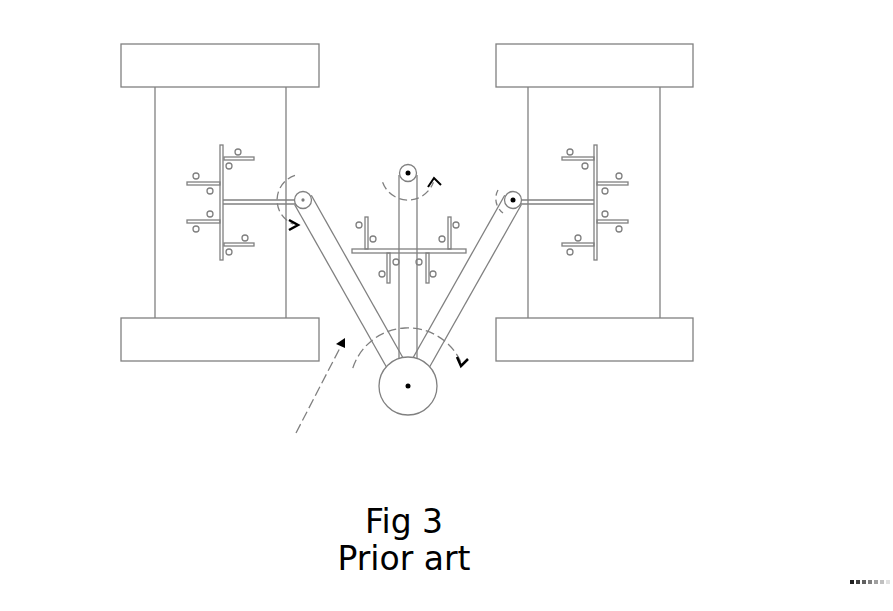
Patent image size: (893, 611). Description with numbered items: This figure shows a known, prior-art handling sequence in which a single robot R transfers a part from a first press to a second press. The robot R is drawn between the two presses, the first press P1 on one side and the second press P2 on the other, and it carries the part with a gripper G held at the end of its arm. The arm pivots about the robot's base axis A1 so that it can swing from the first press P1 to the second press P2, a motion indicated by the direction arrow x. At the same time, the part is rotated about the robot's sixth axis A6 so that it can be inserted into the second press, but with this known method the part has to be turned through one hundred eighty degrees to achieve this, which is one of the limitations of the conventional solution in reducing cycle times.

The first pallet / work station P1 is at (168, 132).
The second pallet / work station P2 is at (647, 143).
The gripper G is at (188, 184).
The sixth axis joint A6 is at (499, 180).
The first axis (base rotation) A1 is at (410, 388).
The robot R is at (410, 389).
The direction x is at (296, 407).